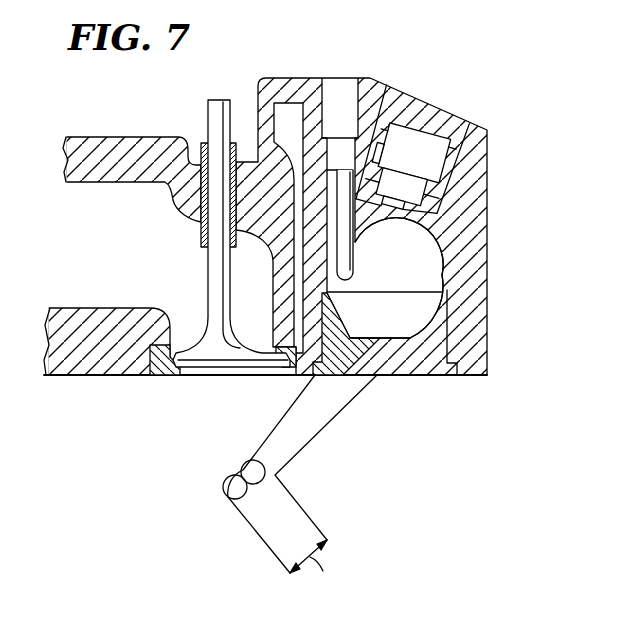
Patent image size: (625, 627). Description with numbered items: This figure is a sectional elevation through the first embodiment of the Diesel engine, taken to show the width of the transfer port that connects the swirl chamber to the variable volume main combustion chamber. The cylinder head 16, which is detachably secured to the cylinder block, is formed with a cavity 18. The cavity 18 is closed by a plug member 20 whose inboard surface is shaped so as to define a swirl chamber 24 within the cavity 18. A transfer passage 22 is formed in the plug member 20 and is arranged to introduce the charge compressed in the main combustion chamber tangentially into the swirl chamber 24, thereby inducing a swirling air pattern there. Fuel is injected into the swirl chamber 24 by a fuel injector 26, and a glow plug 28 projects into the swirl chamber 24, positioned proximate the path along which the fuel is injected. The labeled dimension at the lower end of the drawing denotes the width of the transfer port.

The cylinder head 16 is at (472, 250).
The cavity 18 is at (440, 288).
The plug member 20 is at (318, 377).
The transfer passage 22 is at (405, 267).
The swirl chamber 24 is at (370, 357).
The fuel injector 26 is at (413, 142).
The glow plug 28 is at (341, 268).